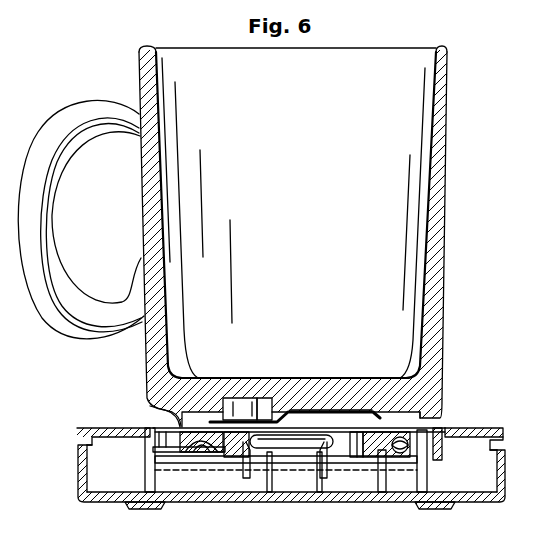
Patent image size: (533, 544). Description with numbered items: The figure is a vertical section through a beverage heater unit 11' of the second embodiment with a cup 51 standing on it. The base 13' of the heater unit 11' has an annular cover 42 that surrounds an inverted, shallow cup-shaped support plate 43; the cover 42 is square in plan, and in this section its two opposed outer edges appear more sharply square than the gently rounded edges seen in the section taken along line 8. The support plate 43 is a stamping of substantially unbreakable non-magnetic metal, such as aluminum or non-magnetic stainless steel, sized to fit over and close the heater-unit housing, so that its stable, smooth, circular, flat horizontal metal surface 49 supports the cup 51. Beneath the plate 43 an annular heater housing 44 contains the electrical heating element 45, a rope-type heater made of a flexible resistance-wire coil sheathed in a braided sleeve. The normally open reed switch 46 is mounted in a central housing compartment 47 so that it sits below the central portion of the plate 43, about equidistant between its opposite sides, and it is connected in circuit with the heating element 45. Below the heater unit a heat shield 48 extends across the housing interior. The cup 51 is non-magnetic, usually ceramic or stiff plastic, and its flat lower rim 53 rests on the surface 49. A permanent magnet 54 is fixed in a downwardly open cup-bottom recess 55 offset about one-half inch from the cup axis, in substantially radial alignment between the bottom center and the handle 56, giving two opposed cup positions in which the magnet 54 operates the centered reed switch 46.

The cup 51 is at (448, 84).
The handle 56 is at (70, 323).
The permanent magnet 54 is at (243, 400).
The cup-bottom recess 55 is at (259, 399).
The metal surface 49 is at (290, 412).
The support plate 43 is at (350, 412).
The annular cover 42 is at (482, 428).
The base 13' is at (291, 515).
The electrical heating element 45 is at (152, 410).
The heater housing 44 is at (207, 456).
The reed switch 46 is at (345, 415).
The central housing compartment 47 is at (237, 444).
The heat shield 48 is at (381, 470).
The lower rim 53 is at (428, 419).
The heater unit 11' is at (48, 443).
The direction arrow 8 is at (322, 541).